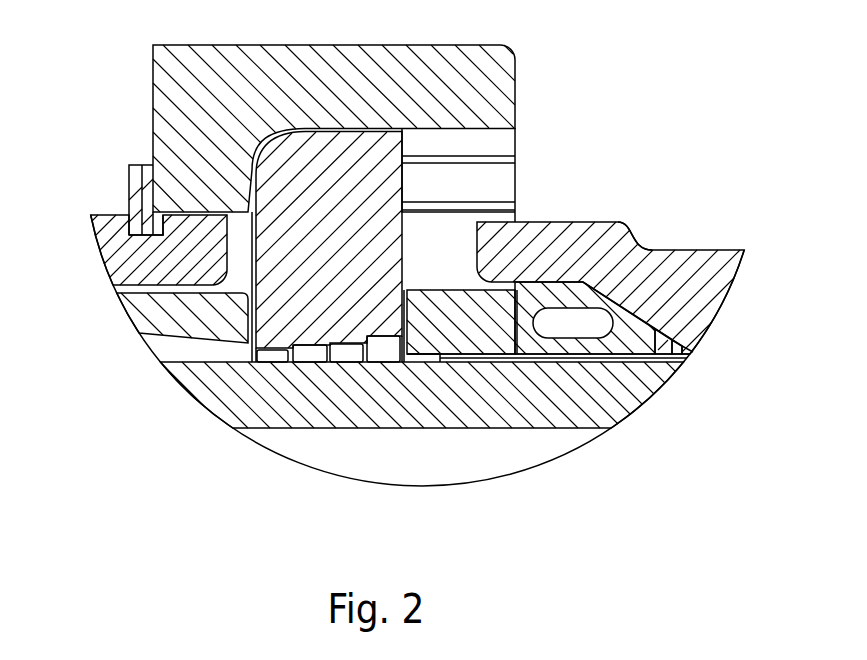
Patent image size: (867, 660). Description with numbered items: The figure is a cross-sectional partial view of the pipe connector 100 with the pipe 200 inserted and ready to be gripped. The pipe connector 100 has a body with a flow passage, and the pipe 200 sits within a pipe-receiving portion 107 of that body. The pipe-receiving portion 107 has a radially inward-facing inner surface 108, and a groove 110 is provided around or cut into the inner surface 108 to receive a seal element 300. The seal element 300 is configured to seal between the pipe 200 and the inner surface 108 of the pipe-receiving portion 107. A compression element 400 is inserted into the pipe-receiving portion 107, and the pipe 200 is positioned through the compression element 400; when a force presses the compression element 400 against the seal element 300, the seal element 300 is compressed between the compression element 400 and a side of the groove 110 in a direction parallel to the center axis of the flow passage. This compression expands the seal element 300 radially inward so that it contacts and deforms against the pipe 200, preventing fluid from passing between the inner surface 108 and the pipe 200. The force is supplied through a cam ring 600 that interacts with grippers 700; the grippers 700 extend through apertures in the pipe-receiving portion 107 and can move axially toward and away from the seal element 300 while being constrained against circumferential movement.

The pipe connector 100 is at (113, 263).
The pipe-receiving portion 107 is at (632, 244).
The inner surface 108 is at (693, 353).
The groove 110 is at (662, 361).
The pipe 200 is at (223, 400).
The seal element 300 is at (580, 308).
The compression element 400 is at (165, 331).
The cam ring 600 is at (165, 102).
The grippers 700 is at (311, 250).